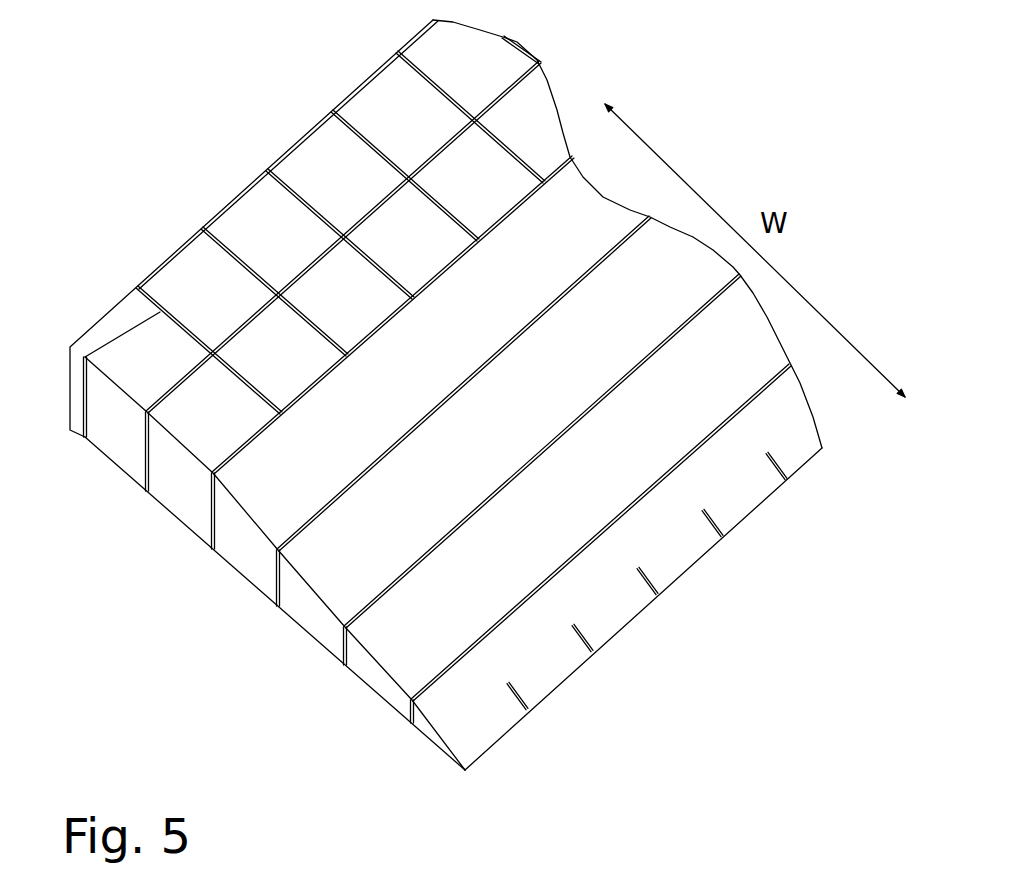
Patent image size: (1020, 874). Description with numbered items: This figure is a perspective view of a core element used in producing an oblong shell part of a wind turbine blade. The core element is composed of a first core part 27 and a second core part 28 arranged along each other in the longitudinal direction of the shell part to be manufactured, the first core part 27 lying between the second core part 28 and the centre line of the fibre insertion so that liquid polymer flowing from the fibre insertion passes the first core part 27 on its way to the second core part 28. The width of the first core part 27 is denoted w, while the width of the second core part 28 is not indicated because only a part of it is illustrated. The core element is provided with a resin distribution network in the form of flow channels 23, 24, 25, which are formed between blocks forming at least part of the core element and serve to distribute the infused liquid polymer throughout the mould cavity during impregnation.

The flow channel 23 is at (147, 458).
The flow channel 24 is at (163, 313).
The flow channel 25 is at (510, 686).
The first core part 27 is at (305, 615).
The second core part 28 is at (341, 88).